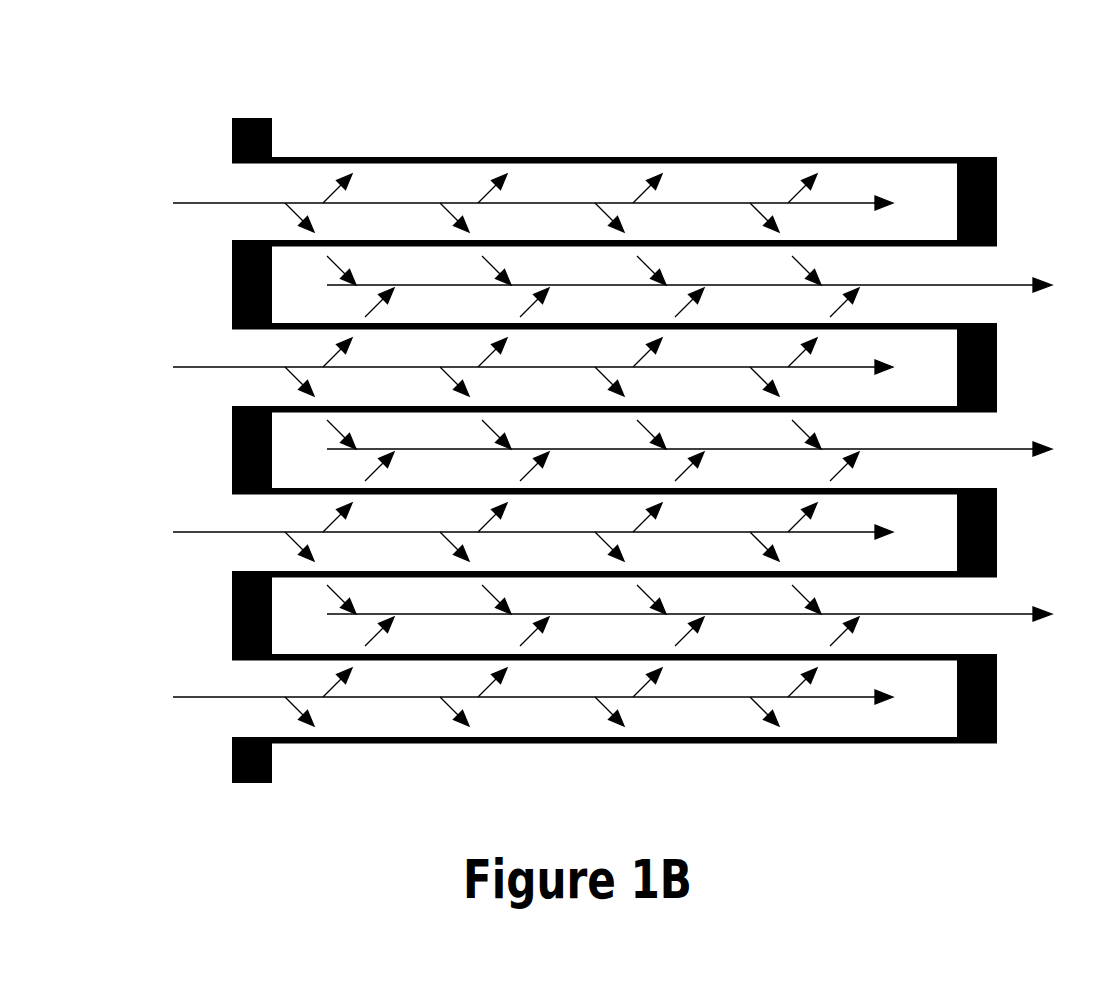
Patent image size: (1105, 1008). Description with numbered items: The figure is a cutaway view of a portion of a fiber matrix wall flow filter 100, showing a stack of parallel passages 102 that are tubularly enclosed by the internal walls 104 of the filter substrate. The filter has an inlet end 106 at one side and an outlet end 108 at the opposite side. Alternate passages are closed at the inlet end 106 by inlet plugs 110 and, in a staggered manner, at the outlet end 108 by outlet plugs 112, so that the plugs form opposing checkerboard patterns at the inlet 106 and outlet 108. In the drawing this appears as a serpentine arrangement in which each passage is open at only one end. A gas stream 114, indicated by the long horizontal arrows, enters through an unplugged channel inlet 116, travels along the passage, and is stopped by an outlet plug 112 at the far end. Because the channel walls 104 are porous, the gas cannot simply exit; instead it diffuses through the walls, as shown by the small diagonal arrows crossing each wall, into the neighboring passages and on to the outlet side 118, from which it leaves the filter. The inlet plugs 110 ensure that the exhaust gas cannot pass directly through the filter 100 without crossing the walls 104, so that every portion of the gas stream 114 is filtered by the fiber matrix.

The fiber matrix wall flow filter 100 is at (613, 75).
The passages 102 is at (232, 182).
The internal walls 104 is at (442, 157).
The inlet end 106 is at (213, 118).
The outlet end 108 is at (1013, 137).
The inlet plugs 110 is at (232, 285).
The outlet plugs 112 is at (1022, 350).
The gas stream 114 is at (208, 367).
The unplugged channel inlet 116 is at (273, 526).
The outlet side 118 is at (997, 606).